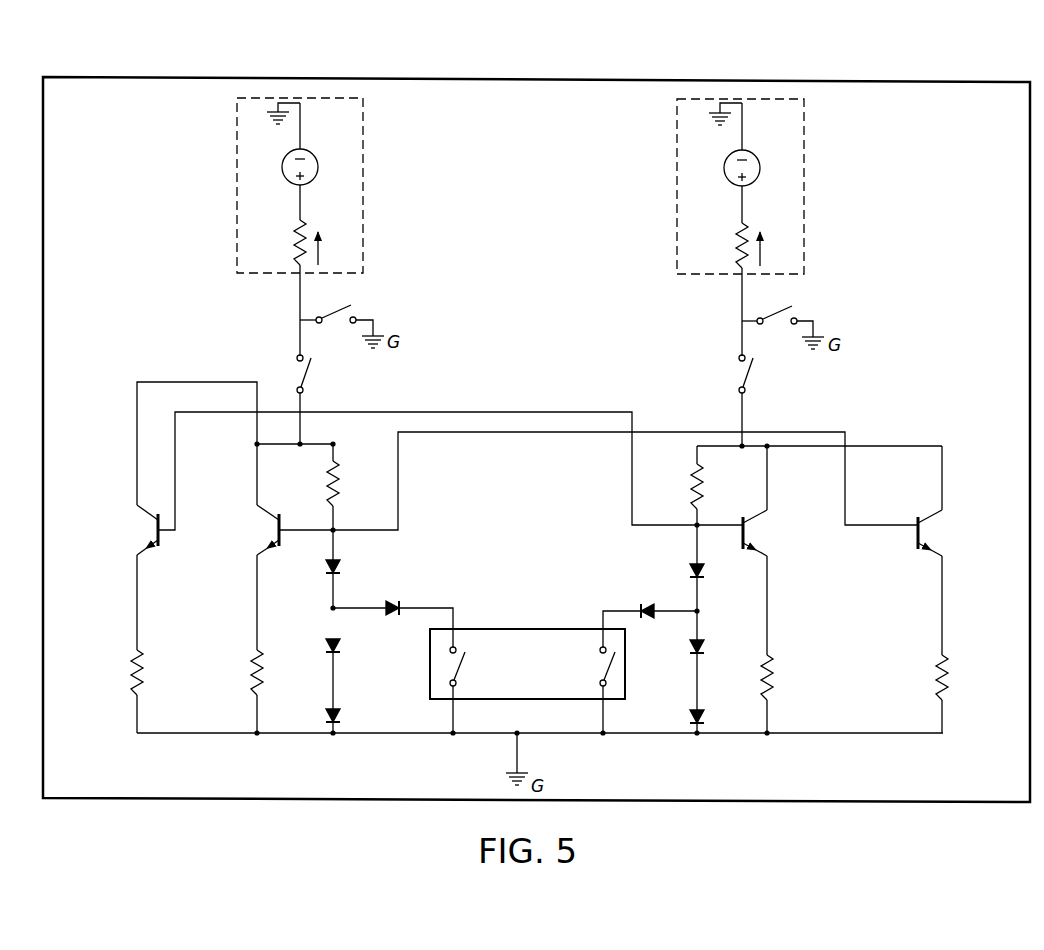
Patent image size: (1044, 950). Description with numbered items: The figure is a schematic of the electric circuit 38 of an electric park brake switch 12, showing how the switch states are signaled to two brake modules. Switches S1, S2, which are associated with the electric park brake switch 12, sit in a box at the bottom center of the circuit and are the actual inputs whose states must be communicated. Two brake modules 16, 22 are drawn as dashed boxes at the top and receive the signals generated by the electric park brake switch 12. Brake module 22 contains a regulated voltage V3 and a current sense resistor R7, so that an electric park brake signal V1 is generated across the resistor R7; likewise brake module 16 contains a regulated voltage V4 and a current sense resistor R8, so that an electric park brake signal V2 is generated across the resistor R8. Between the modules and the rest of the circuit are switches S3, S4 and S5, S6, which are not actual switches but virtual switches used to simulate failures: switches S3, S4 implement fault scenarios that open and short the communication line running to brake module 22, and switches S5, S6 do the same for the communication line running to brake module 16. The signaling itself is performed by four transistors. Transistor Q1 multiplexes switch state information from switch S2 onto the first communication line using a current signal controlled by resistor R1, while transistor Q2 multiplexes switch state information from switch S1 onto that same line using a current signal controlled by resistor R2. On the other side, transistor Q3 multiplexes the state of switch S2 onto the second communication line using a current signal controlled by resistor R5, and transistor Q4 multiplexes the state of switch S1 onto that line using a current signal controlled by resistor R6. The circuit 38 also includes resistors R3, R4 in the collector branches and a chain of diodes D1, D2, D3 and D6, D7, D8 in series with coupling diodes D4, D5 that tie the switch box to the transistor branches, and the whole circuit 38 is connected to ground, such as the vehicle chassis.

The electric circuit 38 is at (948, 61).
The brake module 22 is at (325, 185).
The brake module 16 is at (765, 186).
The electric park brake switch 12 is at (527, 656).
The regulated voltage V3 is at (285, 144).
The regulated voltage V4 is at (726, 144).
The electric park brake signal V1 is at (320, 250).
The electric park brake signal V2 is at (762, 250).
The current sense resistor R7 is at (277, 229).
The current sense resistor R8 is at (718, 230).
The virtual switch S3 is at (373, 312).
The virtual switch S4 is at (322, 368).
The virtual switch S5 is at (802, 312).
The virtual switch S6 is at (762, 368).
The switch S1 is at (472, 665).
The switch S2 is at (596, 666).
The transistor Q1 is at (134, 530).
The transistor Q2 is at (254, 530).
The transistor Q3 is at (769, 533).
The transistor Q4 is at (945, 533).
The resistor R1 is at (152, 644).
The resistor R2 is at (272, 644).
The resistor R3 is at (347, 502).
The resistor R4 is at (712, 505).
The resistor R5 is at (782, 644).
The resistor R6 is at (957, 644).
The diode D1 is at (347, 584).
The diode D2 is at (347, 674).
The diode D3 is at (347, 721).
The diode D4 is at (393, 612).
The diode D5 is at (650, 611).
The diode D6 is at (712, 602).
The diode D7 is at (712, 675).
The diode D8 is at (712, 721).